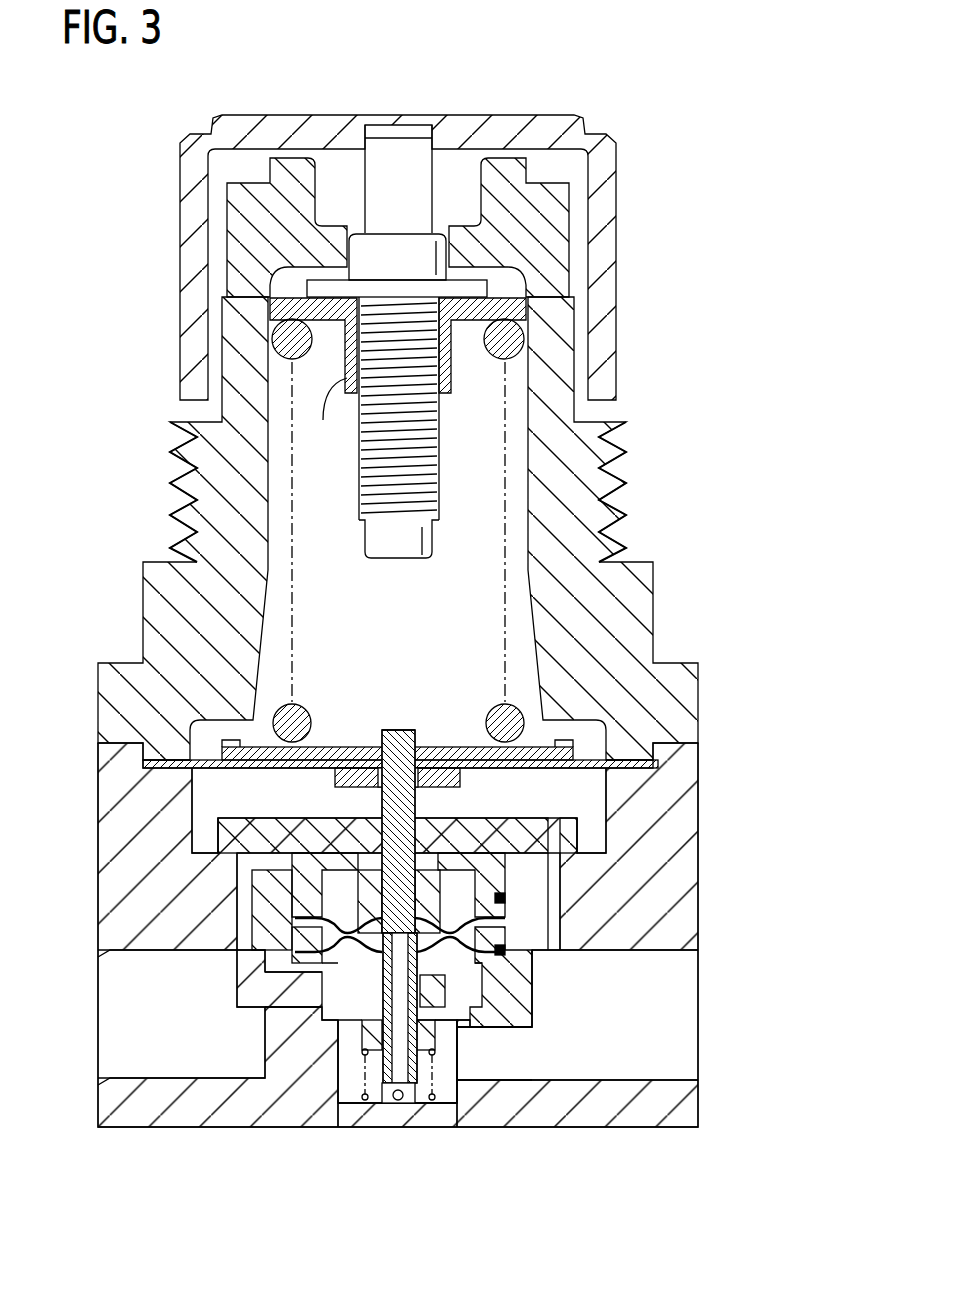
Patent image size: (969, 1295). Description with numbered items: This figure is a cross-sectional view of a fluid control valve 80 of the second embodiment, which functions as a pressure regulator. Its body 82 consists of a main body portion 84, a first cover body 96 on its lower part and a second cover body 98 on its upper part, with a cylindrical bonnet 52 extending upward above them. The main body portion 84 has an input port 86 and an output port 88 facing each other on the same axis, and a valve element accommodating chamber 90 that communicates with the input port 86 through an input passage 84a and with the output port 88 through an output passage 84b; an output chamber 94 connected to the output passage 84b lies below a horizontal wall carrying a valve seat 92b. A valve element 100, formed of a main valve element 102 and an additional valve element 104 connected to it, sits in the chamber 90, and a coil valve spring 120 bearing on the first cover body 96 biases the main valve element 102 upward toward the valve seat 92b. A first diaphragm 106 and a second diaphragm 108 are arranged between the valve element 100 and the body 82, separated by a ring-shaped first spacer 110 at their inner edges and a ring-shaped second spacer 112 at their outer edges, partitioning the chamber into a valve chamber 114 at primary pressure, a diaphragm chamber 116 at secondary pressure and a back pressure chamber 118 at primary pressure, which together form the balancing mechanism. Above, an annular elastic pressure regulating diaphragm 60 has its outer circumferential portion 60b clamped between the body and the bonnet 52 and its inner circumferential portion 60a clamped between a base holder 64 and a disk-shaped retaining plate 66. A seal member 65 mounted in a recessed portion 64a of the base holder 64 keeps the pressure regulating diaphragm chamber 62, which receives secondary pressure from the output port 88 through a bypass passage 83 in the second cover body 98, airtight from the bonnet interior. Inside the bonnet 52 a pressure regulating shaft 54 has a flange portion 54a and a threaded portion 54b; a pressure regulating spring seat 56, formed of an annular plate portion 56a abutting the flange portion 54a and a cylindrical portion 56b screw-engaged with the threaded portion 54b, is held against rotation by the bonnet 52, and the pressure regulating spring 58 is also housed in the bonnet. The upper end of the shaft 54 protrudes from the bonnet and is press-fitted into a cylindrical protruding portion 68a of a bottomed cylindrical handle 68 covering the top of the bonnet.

The fluid control valve 80 is at (663, 86).
The handle 68 is at (192, 165).
The cylindrical protruding portion 68a is at (443, 168).
The pressure regulating shaft 54 is at (399, 375).
The flange portion 54a is at (470, 288).
The threaded portion 54b is at (412, 470).
The pressure regulating spring seat 56 is at (322, 359).
The plate portion 56a is at (278, 310).
The cylindrical portion 56b is at (332, 392).
The pressure regulating spring 58 is at (497, 352).
The bonnet 52 is at (656, 632).
The pressure regulating diaphragm 60 is at (613, 748).
The inner circumferential portion 60a is at (450, 747).
The outer circumferential portion 60b is at (652, 762).
The pressure regulating diaphragm chamber 62 is at (585, 805).
The base holder 64 is at (350, 772).
The recessed portion 64a is at (413, 787).
The seal member 65 is at (383, 750).
The retaining plate 66 is at (335, 745).
The body 82 is at (380, 962).
The main body portion 84 is at (98, 850).
The input passage 84a is at (275, 993).
The output passage 84b is at (512, 1063).
The input port 86 is at (95, 1042).
The output port 88 is at (680, 996).
The valve element accommodating chamber 90 is at (460, 983).
The valve seat 92b is at (367, 1020).
The output chamber 94 is at (450, 1092).
The first cover body 96 is at (360, 1117).
The second cover body 98 is at (290, 823).
The bypass passage 83 is at (553, 825).
The valve element 100 is at (552, 931).
The main valve element 102 is at (416, 989).
The additional valve element 104 is at (446, 877).
The first diaphragm 106 is at (502, 956).
The second diaphragm 108 is at (506, 918).
The first spacer 110 is at (363, 955).
The second spacer 112 is at (290, 950).
The valve chamber 114 is at (443, 1002).
The diaphragm chamber 116 is at (477, 942).
The back pressure chamber 118 is at (465, 855).
The valve spring 120 is at (343, 1097).